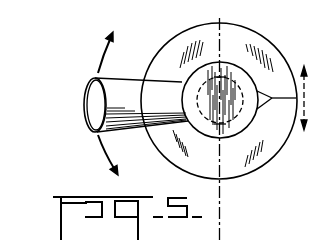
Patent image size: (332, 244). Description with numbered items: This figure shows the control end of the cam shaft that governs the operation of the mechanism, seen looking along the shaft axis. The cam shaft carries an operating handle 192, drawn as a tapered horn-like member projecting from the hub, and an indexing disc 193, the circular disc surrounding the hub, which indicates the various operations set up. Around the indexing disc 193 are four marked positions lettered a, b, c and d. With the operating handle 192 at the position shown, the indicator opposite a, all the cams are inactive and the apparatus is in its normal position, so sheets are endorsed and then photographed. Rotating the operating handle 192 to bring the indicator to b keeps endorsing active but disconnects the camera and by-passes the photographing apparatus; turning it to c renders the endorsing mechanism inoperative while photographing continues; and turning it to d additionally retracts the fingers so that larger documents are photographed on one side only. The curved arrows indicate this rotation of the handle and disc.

The operating handle 192 is at (92, 103).
The indexing disc 193 is at (274, 47).
The indicator position a is at (283, 109).
The indicator position b is at (226, 47).
The indicator position c is at (244, 160).
The indicator position d is at (190, 154).